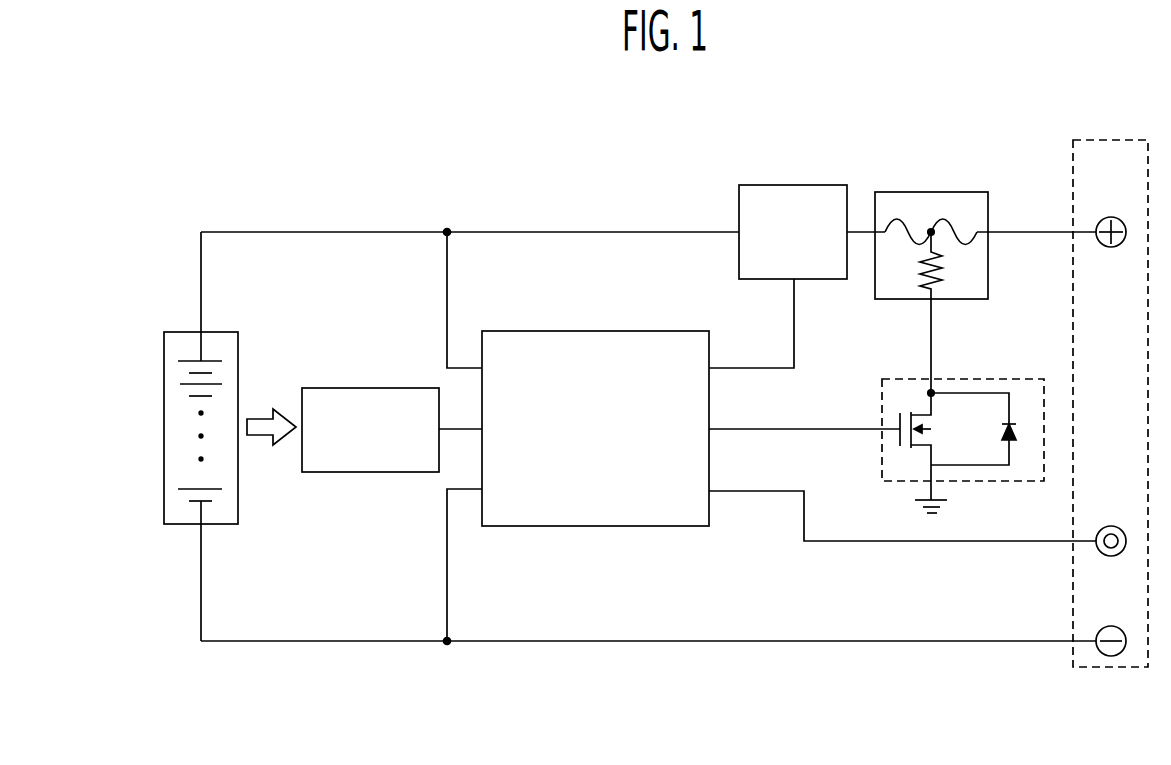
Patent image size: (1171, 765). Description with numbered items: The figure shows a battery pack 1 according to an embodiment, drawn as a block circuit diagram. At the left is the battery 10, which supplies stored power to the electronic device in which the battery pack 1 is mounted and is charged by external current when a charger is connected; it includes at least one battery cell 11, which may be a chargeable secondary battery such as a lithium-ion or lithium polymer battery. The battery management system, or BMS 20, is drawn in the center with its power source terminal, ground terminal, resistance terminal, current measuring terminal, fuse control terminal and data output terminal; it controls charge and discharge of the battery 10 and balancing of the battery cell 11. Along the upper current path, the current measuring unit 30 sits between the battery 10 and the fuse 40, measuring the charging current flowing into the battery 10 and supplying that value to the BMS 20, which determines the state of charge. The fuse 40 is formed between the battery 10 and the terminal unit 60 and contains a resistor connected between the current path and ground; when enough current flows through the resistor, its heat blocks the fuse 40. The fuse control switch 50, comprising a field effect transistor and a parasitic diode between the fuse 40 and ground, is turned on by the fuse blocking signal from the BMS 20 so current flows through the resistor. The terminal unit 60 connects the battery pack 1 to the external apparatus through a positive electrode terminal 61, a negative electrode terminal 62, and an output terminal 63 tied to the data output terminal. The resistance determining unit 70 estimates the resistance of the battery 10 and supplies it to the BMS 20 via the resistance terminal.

The battery pack 1 is at (957, 94).
The battery 10 is at (218, 332).
The battery cell 11 is at (187, 360).
The battery management system (BMS) 20 is at (673, 331).
The current measuring unit 30 is at (792, 185).
The fuse 40 is at (933, 192).
The fuse control switch 50 is at (1026, 379).
The terminal unit 60 is at (1112, 140).
The positive electrode terminal 61 is at (1112, 218).
The negative electrode terminal 62 is at (1110, 626).
The output terminal 63 is at (1110, 526).
The resistance determining unit 70 is at (363, 388).